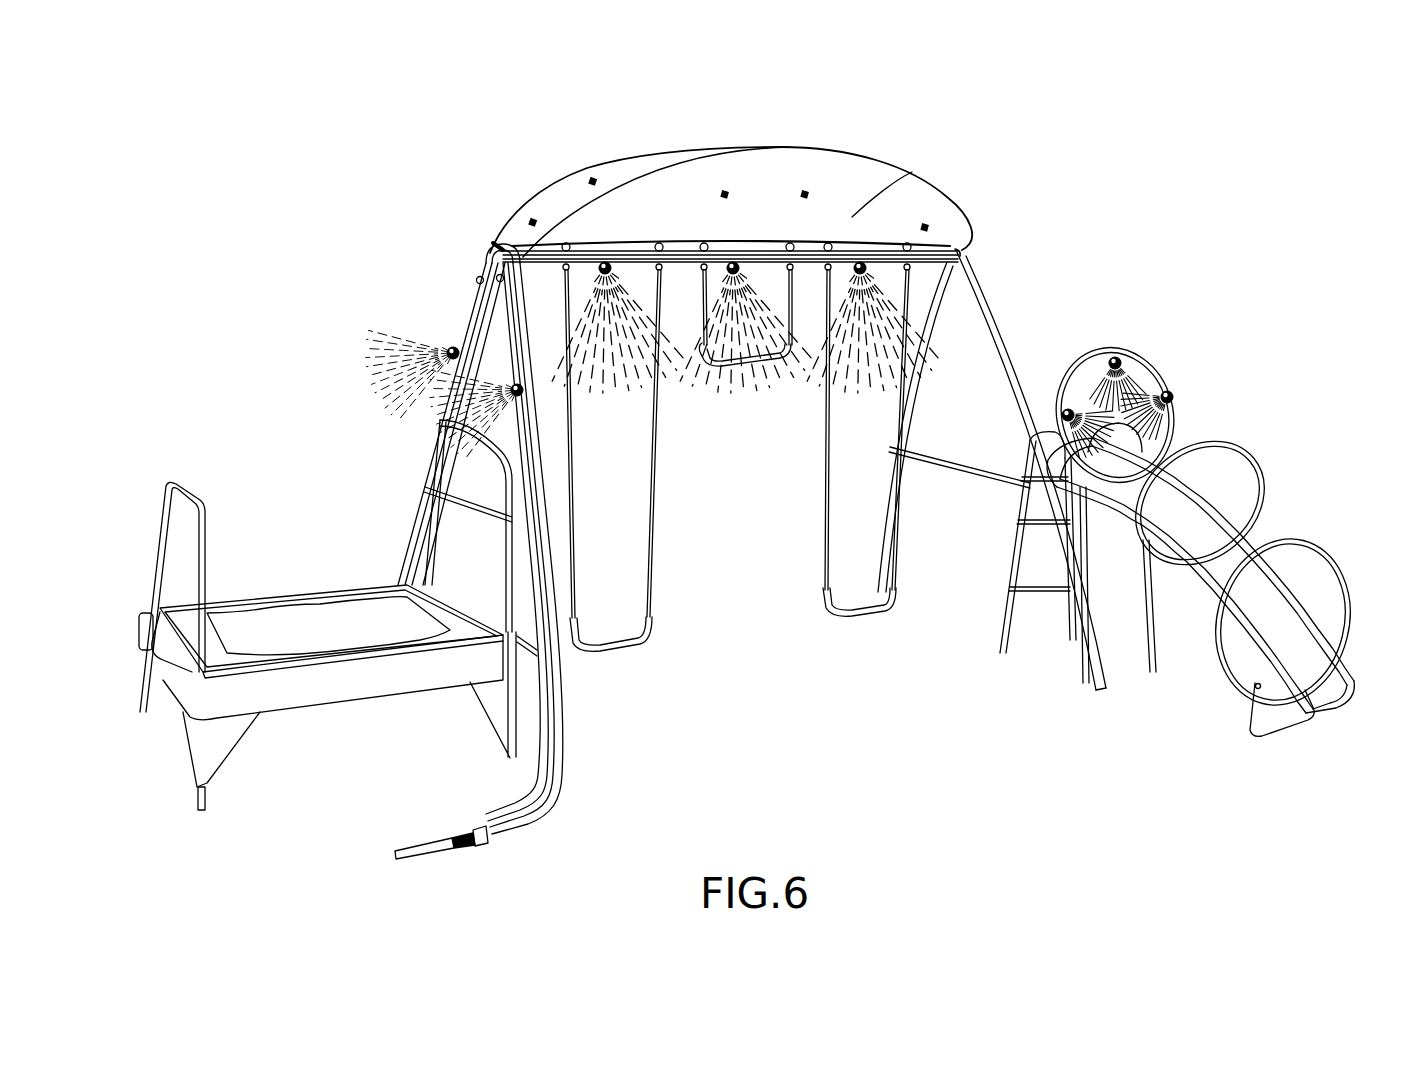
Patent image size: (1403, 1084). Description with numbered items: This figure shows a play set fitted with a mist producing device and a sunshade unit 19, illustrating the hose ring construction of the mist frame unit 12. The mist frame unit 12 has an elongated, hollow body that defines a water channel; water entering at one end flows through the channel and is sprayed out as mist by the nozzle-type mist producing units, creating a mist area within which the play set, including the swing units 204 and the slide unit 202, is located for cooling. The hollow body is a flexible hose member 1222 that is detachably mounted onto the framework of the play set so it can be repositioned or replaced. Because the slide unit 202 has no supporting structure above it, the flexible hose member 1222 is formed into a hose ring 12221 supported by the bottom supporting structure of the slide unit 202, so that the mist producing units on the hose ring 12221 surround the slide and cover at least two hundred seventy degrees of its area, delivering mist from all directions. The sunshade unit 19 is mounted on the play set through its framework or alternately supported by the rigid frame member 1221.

The sunshade unit 19 is at (857, 178).
The mist frame unit 12 is at (563, 732).
The rigid frame member 1221 is at (768, 262).
The flexible hose member 1222 is at (548, 808).
The hose ring 12221 is at (1093, 358).
The swing unit 204 is at (868, 612).
The slide unit 202 is at (1192, 600).